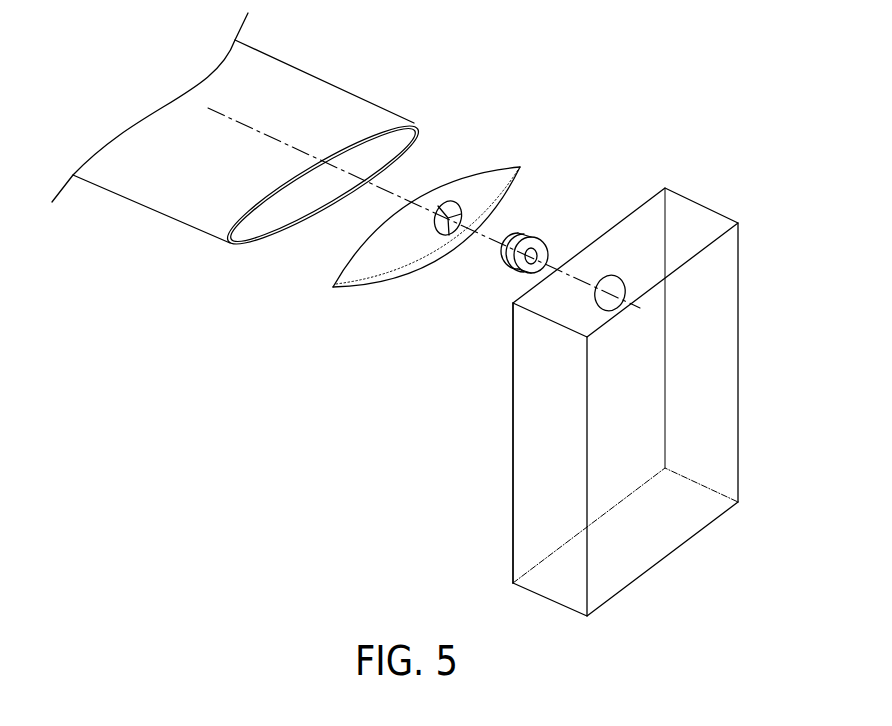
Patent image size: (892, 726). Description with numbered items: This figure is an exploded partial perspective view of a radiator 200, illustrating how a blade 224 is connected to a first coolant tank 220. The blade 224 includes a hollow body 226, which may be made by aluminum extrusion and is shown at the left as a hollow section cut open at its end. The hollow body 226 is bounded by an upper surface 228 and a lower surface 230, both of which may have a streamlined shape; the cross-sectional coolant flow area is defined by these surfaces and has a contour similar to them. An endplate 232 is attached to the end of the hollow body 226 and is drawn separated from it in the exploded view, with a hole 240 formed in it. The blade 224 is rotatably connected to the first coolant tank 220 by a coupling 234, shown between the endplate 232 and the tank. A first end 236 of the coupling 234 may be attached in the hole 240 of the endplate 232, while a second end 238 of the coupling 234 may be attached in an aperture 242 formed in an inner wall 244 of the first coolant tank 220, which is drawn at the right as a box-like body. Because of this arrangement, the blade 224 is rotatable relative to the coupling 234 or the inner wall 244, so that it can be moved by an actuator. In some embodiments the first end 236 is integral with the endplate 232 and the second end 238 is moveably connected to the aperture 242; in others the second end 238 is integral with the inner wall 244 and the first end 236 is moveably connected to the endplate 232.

The radiator 200 is at (747, 159).
The first coolant tank 220 is at (738, 360).
The blade 224 is at (314, 76).
The hollow body 226 is at (177, 197).
The upper surface 228 is at (343, 102).
The lower surface 230 is at (278, 230).
The endplate 232 is at (483, 163).
The coupling 234 is at (527, 234).
The first end 236 is at (505, 247).
The second end 238 is at (540, 258).
The hole 240 is at (448, 237).
The aperture 242 is at (620, 278).
The inner wall 244 is at (513, 445).